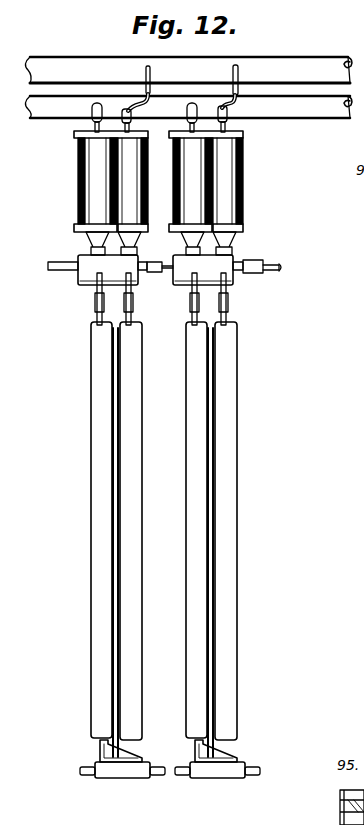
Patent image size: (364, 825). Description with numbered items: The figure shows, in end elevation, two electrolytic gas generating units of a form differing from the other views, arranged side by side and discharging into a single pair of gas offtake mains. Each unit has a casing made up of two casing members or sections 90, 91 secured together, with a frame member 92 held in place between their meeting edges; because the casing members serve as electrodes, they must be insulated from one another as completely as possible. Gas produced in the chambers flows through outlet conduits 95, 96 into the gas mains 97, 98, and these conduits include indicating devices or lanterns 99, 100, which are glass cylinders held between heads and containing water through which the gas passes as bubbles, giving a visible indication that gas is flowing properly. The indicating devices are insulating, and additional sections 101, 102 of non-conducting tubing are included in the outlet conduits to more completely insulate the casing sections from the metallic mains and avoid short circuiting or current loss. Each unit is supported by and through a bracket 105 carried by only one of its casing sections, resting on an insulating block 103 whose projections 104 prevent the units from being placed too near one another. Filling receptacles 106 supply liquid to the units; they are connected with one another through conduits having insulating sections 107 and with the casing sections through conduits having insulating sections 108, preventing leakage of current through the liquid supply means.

The casing member 90 is at (99, 419).
The casing member 91 is at (138, 452).
The frame member 92 is at (118, 537).
The outlet conduit 95 is at (77, 139).
The outlet conduit 96 is at (151, 76).
The gas main 97 is at (322, 110).
The gas main 98 is at (298, 65).
The indicating device 99 is at (95, 182).
The indicating device 100 is at (132, 185).
The section of non-conducting tubing 101 is at (99, 103).
The section of non-conducting tubing 102 is at (130, 107).
The insulating block 103 is at (127, 769).
The projection 104 is at (92, 767).
The bracket 105 is at (100, 748).
The filling receptacle 106 is at (88, 267).
The insulating section 107 is at (155, 273).
The insulating section 108 is at (97, 298).